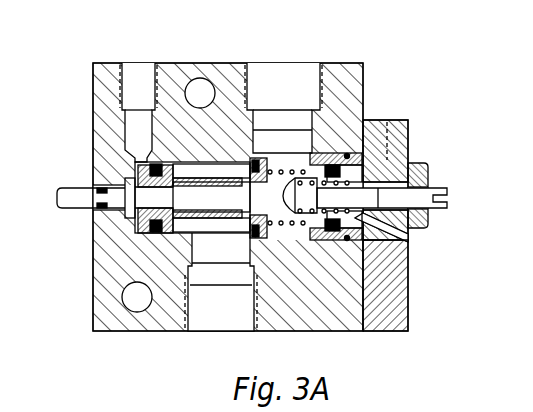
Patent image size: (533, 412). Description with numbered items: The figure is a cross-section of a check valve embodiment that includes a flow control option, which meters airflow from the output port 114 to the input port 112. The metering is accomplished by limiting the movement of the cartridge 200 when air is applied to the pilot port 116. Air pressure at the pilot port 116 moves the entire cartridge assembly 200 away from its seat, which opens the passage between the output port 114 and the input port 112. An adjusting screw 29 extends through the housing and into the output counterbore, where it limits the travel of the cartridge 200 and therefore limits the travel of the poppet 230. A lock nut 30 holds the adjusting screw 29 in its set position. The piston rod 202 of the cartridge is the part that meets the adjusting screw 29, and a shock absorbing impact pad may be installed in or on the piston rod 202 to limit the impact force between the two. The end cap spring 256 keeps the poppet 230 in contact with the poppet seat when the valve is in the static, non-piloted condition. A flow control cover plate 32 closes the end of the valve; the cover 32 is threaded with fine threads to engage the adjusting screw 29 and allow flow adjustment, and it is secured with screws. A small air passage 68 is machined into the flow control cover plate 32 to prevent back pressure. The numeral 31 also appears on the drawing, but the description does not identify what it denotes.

The output port 114 is at (290, 62).
The pilot port 116 is at (132, 62).
The input port 112 is at (203, 333).
The flow control cover plate 32 is at (408, 303).
The small air passage 68 is at (410, 237).
The vent passage 31 is at (410, 238).
The lock nut 30 is at (427, 218).
The adjusting screw 29 is at (440, 186).
The cartridge 200 is at (190, 222).
The poppet 230 is at (253, 163).
The piston rod 202 is at (290, 180).
The end cap spring 256 is at (330, 212).